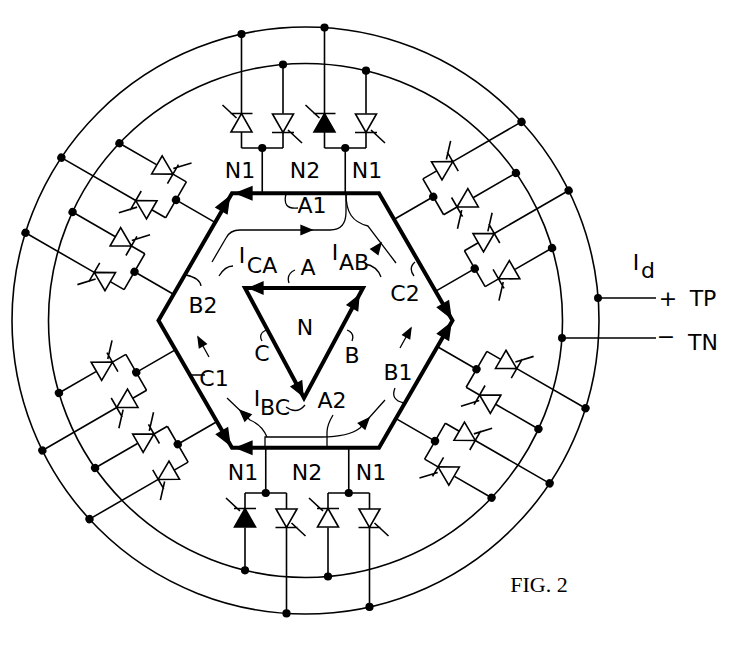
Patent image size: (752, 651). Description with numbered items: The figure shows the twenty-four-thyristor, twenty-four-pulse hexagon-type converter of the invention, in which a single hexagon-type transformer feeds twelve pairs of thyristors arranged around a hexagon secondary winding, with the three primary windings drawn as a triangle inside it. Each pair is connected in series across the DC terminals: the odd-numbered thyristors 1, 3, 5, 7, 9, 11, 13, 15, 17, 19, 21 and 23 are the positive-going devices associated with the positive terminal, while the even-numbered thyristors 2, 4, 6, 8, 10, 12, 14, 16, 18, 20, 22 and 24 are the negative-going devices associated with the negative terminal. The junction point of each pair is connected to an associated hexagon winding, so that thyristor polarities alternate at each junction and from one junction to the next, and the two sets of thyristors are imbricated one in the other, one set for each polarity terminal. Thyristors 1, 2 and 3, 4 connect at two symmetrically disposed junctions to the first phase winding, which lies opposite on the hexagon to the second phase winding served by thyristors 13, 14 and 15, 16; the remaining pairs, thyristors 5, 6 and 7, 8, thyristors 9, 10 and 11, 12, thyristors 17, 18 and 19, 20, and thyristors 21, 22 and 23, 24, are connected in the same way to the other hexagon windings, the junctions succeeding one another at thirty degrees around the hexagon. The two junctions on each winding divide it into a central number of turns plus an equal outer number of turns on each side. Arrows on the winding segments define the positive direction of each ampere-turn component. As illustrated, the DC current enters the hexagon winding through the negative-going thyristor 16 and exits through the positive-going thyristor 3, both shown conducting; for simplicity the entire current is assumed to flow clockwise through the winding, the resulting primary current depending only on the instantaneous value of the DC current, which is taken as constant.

The thyristor 1 is at (229, 89).
The thyristor 2 is at (281, 104).
The thyristor 3 is at (326, 86).
The thyristor 4 is at (377, 107).
The thyristor 5 is at (471, 146).
The thyristor 6 is at (483, 196).
The thyristor 7 is at (516, 216).
The thyristor 8 is at (522, 271).
The thyristor 9 is at (539, 372).
The thyristor 10 is at (502, 412).
The thyristor 11 is at (501, 451).
The thyristor 12 is at (457, 483).
The thyristor 13 is at (385, 551).
The thyristor 14 is at (335, 536).
The thyristor 15 is at (279, 555).
The thyristor 16 is at (229, 533).
The thyristor 17 is at (141, 495).
The thyristor 18 is at (128, 445).
The thyristor 19 is at (95, 425).
The thyristor 20 is at (89, 371).
The thyristor 21 is at (71, 269).
The thyristor 22 is at (109, 228).
The thyristor 23 is at (110, 190).
The thyristor 24 is at (153, 158).